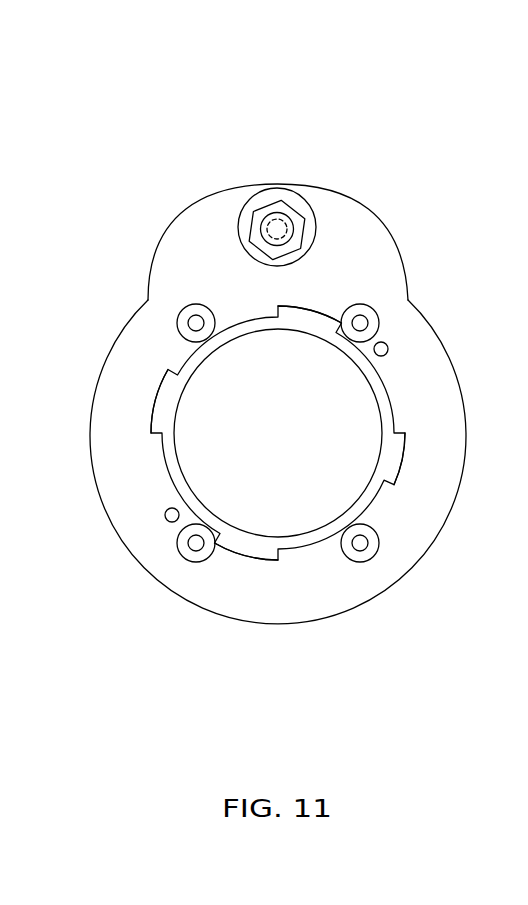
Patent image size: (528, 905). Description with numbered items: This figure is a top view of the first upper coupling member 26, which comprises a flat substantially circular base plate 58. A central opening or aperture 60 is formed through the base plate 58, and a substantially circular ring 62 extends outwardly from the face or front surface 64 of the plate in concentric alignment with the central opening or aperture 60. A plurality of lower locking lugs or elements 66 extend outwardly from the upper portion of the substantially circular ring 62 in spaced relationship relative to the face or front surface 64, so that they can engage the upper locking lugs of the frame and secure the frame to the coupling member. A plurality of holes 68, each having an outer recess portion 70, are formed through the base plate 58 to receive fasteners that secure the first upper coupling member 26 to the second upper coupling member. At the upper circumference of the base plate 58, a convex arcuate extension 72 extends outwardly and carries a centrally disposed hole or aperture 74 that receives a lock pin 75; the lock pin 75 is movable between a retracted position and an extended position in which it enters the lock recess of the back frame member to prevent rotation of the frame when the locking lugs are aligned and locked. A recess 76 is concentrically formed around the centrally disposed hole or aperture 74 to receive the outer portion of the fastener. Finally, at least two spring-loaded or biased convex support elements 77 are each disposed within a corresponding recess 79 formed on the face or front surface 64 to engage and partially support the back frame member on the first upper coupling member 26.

The first upper coupling member 26 is at (222, 155).
The flat substantially circular base plate 58 is at (263, 623).
The central opening or aperture 60 is at (228, 463).
The substantially circular ring 62 is at (382, 395).
The face or front surface 64 is at (306, 592).
The lower locking lugs or elements 66 is at (315, 312).
The holes 68 is at (183, 315).
The outer recess portion 70 is at (177, 307).
The convex arcuate extension 72 is at (352, 193).
The centrally disposed hole or aperture 74 is at (268, 213).
The lock pin 75 is at (278, 214).
The recess 76 is at (300, 198).
The spring-loaded or biased convex support elements 77 is at (388, 348).
The recess 79 is at (395, 336).